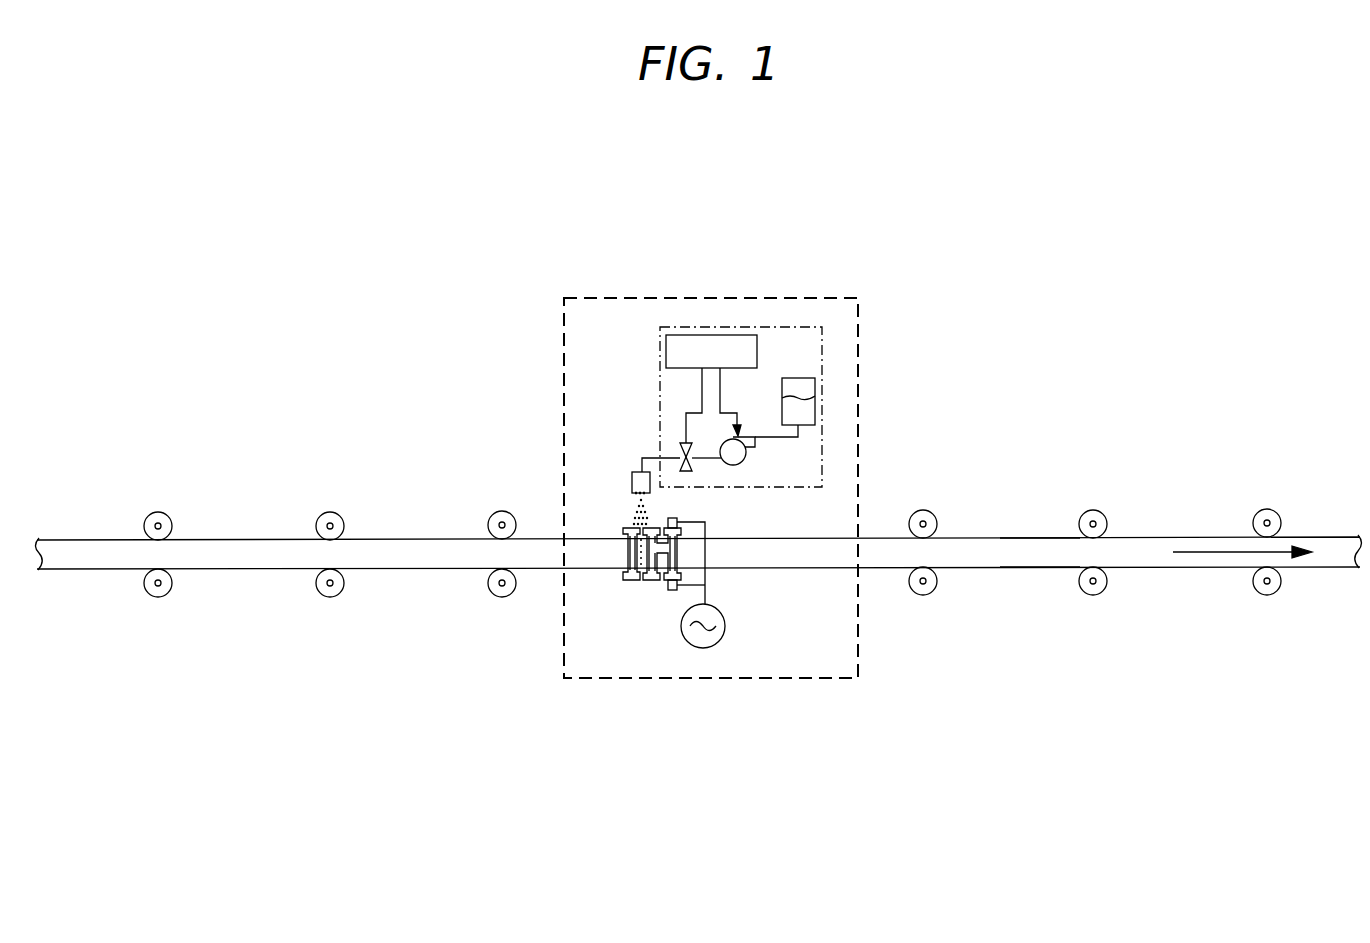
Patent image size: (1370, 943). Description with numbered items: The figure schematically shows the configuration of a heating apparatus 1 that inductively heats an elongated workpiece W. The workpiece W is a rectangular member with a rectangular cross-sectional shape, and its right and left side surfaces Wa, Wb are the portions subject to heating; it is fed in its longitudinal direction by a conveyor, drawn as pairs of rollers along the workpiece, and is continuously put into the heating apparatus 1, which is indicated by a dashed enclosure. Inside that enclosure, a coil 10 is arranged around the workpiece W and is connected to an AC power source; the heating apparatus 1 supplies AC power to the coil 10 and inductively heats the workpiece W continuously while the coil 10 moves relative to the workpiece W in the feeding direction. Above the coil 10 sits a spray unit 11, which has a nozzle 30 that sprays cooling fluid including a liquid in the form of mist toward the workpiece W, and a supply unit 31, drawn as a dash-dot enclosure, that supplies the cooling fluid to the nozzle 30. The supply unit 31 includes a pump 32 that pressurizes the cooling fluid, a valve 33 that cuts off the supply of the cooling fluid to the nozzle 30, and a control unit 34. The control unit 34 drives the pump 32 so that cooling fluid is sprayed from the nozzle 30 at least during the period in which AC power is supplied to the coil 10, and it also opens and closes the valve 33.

The heating apparatus 1 is at (829, 288).
The coil 10 is at (648, 592).
The spray unit 11 is at (645, 342).
The nozzle 30 is at (632, 480).
The supply unit 31 is at (823, 358).
The pump 32 is at (757, 452).
The valve 33 is at (693, 463).
The control unit 34 is at (700, 335).
The workpiece W is at (430, 528).
The side surface of the workpiece Wa is at (1037, 567).
The side surface of the workpiece Wb is at (1036, 538).